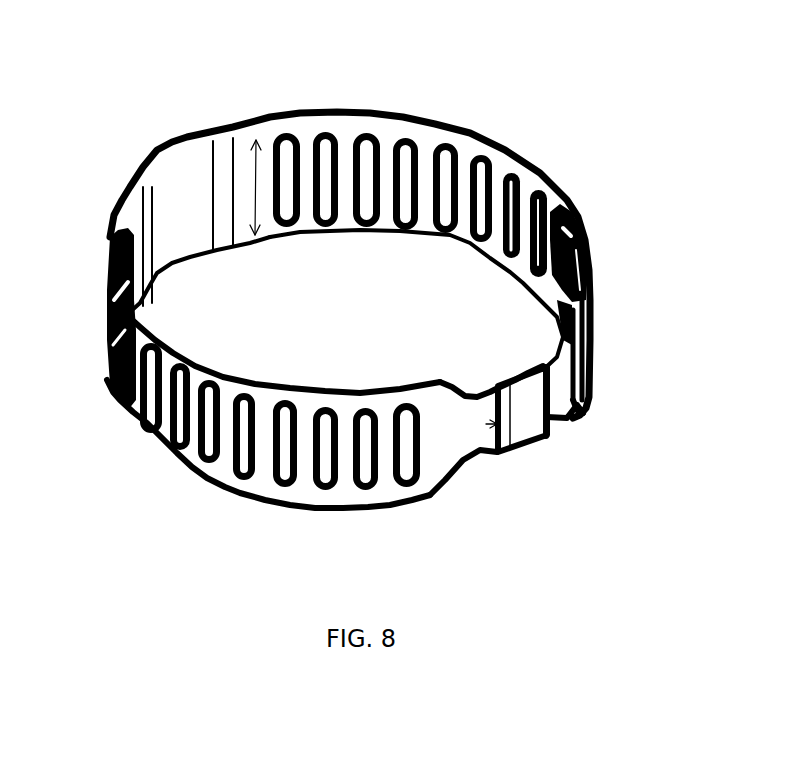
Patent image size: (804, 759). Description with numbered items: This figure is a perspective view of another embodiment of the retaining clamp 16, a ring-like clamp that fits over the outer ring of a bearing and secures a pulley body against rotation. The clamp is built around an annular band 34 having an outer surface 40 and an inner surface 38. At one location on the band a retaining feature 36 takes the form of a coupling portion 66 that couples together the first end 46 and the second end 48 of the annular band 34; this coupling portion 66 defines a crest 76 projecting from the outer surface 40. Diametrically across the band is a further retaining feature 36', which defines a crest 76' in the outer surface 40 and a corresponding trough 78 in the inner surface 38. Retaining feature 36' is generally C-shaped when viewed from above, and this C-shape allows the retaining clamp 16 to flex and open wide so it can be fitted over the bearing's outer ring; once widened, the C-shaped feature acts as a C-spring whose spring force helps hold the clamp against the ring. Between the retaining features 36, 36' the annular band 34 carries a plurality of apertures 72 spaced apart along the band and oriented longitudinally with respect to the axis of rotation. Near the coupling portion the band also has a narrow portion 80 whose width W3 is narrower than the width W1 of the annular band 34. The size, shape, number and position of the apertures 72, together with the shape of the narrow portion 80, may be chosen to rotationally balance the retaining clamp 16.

The retaining clamp 16 is at (553, 92).
The annular band 34 is at (327, 117).
The retaining feature 36 is at (588, 425).
The retaining feature 36' is at (236, 134).
The inner surface 38 is at (347, 220).
The outer surface 40 is at (343, 493).
The first end 46 is at (560, 400).
The second end 48 is at (467, 450).
The coupling portion 66 is at (527, 427).
The apertures 72 is at (407, 163).
The crest 76 is at (544, 475).
The crest 76' is at (105, 243).
The trough 78 is at (185, 275).
The narrow portion 80 is at (540, 347).
The width of the annular band W1 is at (253, 187).
The width of the narrow portion W3 is at (479, 426).